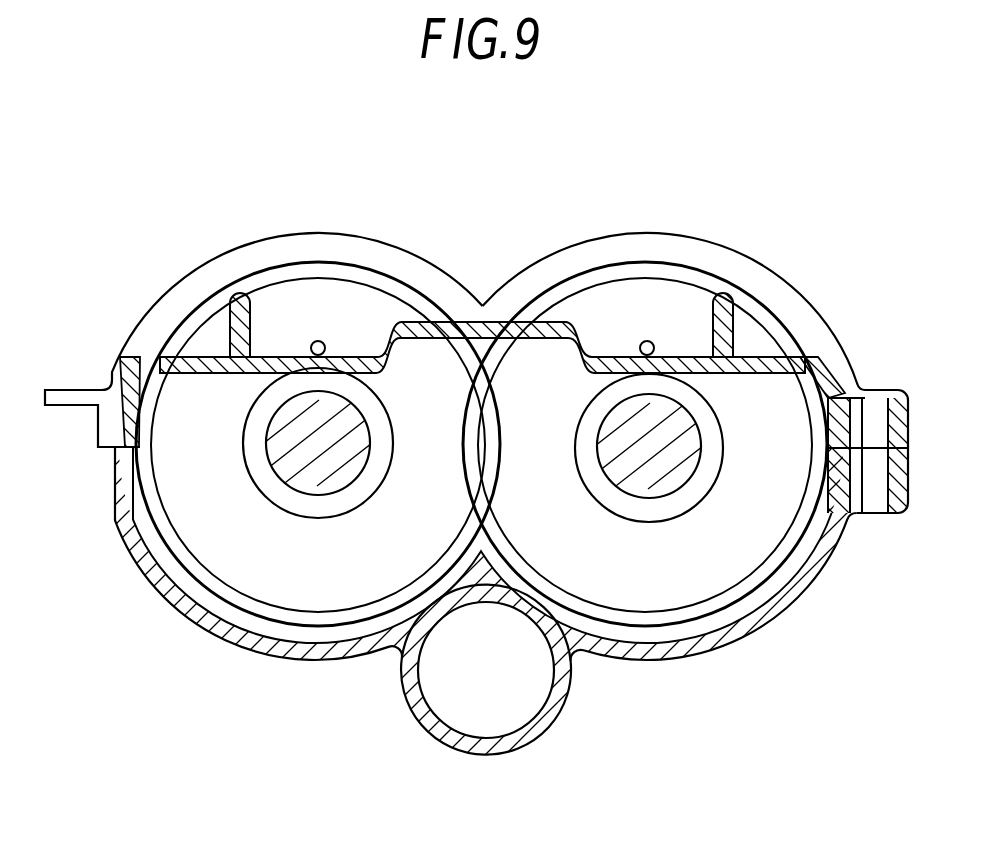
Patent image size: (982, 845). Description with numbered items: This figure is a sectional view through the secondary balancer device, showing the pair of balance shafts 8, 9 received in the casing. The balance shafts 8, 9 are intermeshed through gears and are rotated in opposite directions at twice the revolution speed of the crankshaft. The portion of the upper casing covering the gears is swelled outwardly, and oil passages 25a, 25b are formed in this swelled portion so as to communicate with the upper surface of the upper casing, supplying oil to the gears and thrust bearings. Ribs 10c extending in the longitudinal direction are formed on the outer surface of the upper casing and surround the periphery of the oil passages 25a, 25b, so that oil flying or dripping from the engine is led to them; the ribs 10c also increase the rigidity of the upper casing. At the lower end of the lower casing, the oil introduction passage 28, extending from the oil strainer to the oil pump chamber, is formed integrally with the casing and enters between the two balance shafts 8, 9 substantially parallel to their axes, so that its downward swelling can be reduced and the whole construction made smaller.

The rib 10c is at (232, 298).
The oil passage 25b is at (318, 341).
The oil passage 25a is at (647, 341).
The balance shaft 9 is at (340, 478).
The balance shaft 8 is at (673, 483).
The oil introduction passage 28 is at (528, 703).